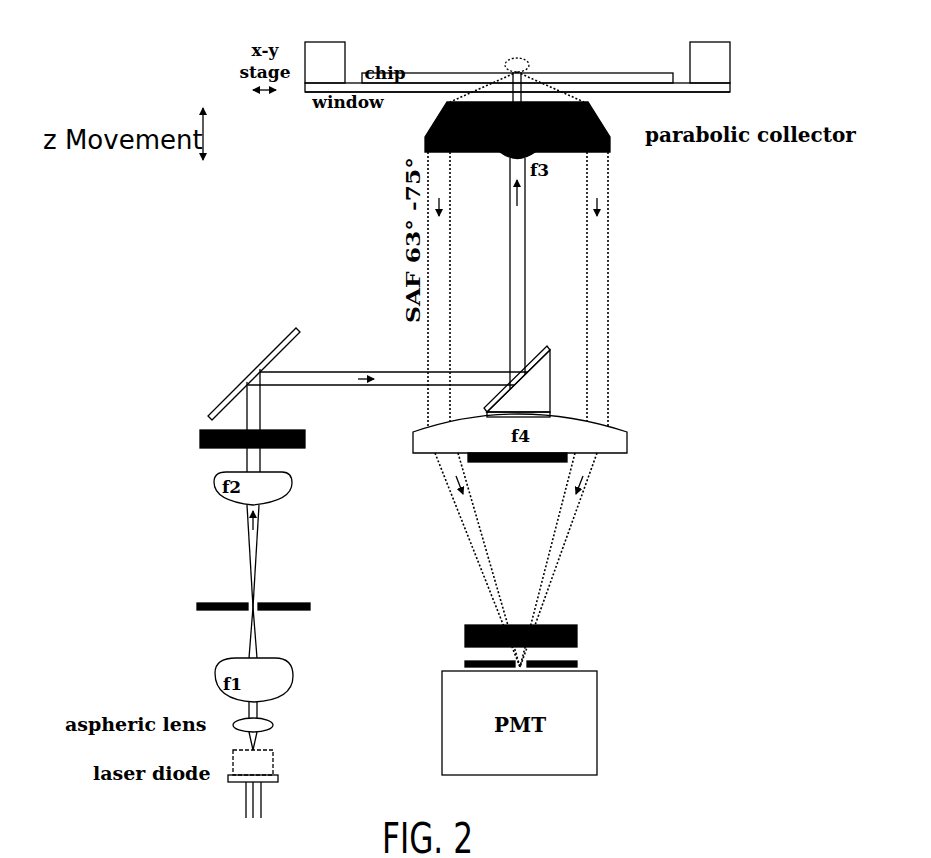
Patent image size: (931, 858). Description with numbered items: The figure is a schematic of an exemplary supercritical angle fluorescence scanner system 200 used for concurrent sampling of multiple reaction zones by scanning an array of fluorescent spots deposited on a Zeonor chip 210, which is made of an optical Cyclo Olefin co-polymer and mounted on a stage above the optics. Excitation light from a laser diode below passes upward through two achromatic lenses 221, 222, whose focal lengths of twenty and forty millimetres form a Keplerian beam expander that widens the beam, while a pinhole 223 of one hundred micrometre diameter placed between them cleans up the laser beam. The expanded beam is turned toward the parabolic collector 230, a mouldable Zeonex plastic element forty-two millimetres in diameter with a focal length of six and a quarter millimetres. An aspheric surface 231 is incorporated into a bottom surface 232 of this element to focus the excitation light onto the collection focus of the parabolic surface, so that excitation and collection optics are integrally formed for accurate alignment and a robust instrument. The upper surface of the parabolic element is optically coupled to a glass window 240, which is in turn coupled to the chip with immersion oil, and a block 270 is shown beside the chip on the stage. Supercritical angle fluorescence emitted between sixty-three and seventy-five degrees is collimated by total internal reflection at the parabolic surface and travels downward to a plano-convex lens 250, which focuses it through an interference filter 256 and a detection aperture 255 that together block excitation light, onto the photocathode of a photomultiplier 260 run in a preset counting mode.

The system 200 is at (632, 572).
The Zeonor chip 210 is at (637, 72).
The achromatic lens 221 is at (215, 677).
The achromatic lens 222 is at (215, 491).
The pinhole 223 is at (198, 605).
The parabolic collector 230 is at (600, 113).
The aspheric surface 231 is at (507, 160).
The bottom surface 232 is at (572, 153).
The glass window 240 is at (337, 112).
The plano-convex lens 250 is at (627, 435).
The detection aperture 255 is at (577, 664).
The interference filter 256 is at (577, 626).
The photomultiplier 260 is at (597, 753).
The stage block 270 is at (718, 60).